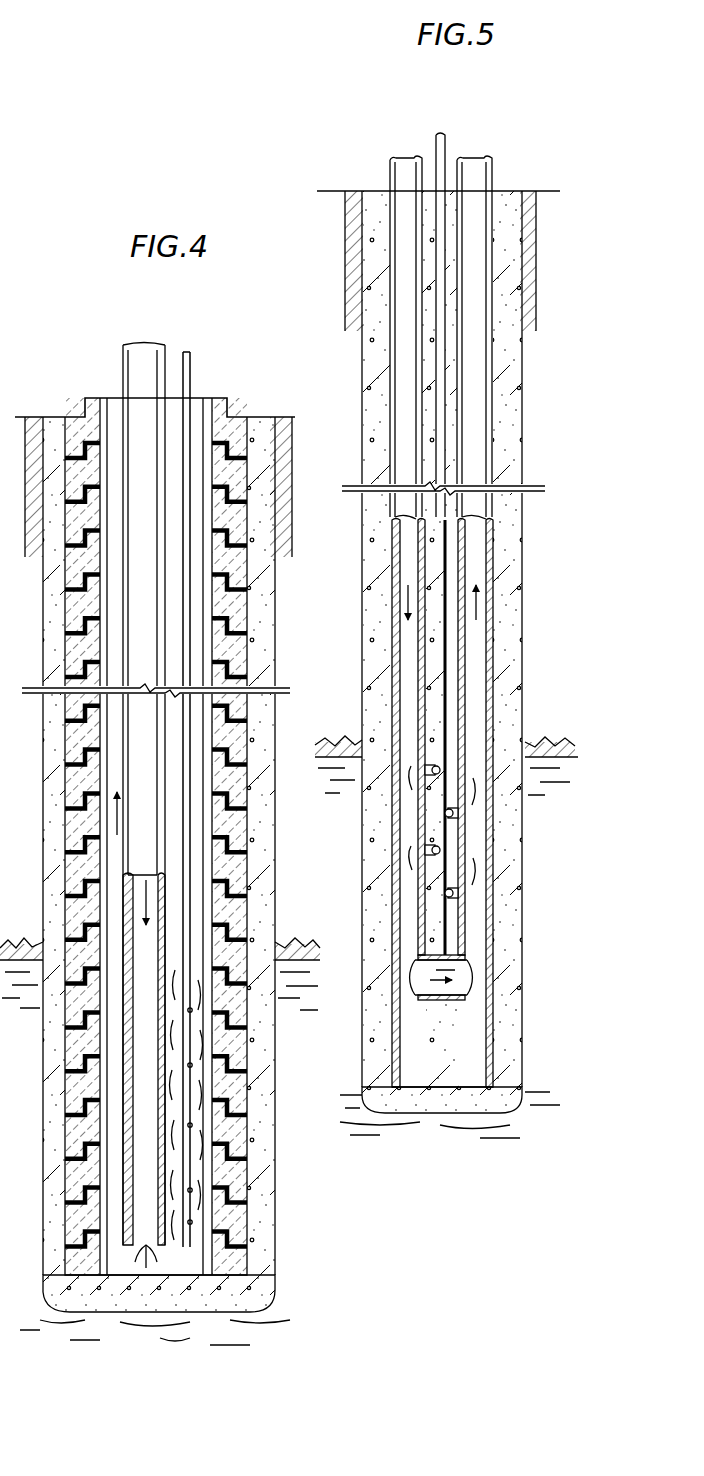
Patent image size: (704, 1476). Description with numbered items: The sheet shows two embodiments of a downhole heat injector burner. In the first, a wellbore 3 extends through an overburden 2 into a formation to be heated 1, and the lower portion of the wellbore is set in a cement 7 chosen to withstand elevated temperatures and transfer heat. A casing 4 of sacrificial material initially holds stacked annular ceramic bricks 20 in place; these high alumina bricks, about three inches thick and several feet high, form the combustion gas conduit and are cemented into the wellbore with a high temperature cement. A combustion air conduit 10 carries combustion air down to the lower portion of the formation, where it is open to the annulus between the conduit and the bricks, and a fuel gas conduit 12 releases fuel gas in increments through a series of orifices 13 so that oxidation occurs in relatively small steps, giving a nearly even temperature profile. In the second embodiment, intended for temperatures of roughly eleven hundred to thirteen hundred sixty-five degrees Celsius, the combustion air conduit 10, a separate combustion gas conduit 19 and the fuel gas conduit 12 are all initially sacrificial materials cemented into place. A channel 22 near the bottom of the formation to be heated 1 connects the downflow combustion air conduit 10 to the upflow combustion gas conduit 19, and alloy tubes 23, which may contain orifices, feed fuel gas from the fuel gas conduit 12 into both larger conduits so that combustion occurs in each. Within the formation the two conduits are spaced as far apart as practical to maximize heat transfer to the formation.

In FIG. 4, the formation to be heated 1 is at (24, 1183).
In FIG. 5, the formation to be heated 1 is at (350, 852).
In FIG. 4, the overburden 2 is at (24, 632).
In FIG. 5, the overburden 2 is at (347, 402).
In FIG. 4, the wellbore 3 is at (272, 528).
In FIG. 5, the wellbore 3 is at (522, 302).
In FIG. 4, the casing 4 is at (222, 906).
In FIG. 4, the cement 7 is at (56, 1052).
In FIG. 4, the combustion air conduit 10 is at (122, 355).
In FIG. 5, the combustion air conduit 10 is at (396, 316).
In FIG. 4, the fuel gas conduit 12 is at (192, 360).
In FIG. 5, the fuel gas conduit 12 is at (450, 404).
In FIG. 4, the orifices 13 is at (193, 1126).
In FIG. 5, the combustion gas conduit 19 is at (493, 562).
In FIG. 4, the ceramic bricks 20 is at (78, 822).
In FIG. 5, the channel 22 is at (455, 968).
In FIG. 5, the alloy tubes 23 is at (452, 808).